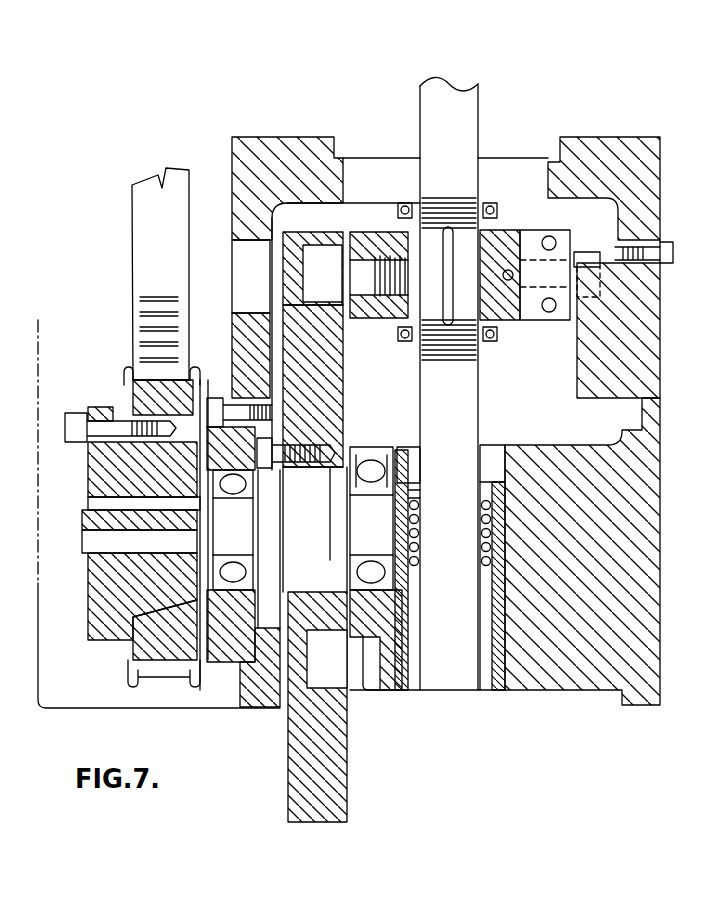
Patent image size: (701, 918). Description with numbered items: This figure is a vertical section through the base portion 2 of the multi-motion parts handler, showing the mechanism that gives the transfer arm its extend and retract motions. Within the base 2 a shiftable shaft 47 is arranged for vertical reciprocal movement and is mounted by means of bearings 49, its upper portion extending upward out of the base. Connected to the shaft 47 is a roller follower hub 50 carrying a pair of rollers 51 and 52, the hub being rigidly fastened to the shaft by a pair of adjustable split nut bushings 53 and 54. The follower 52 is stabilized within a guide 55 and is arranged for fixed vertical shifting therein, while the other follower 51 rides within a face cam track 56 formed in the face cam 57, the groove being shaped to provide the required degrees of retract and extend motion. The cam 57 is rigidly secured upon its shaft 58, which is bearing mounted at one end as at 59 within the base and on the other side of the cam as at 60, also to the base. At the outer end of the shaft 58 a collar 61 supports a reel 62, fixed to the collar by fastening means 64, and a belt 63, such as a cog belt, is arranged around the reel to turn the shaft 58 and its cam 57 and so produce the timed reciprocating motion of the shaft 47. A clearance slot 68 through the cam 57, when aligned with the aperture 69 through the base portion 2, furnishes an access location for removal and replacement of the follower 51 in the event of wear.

The base portion 2 is at (645, 637).
The shiftable shaft 47 is at (488, 398).
The bearings 49 is at (416, 508).
The roller follower hub 50 is at (386, 308).
The roller 51 is at (313, 268).
The roller 52 is at (583, 252).
The adjustable split nut bushing 53 is at (487, 233).
The adjustable split nut bushing 54 is at (480, 337).
The guide 55 is at (638, 341).
The face cam track 56 is at (324, 306).
The face cam 57 is at (336, 782).
The shaft 58 is at (100, 541).
The bearing 59 is at (370, 468).
The bearing 60 is at (220, 494).
The collar 61 is at (100, 606).
The reel 62 is at (128, 655).
The belt 63 is at (133, 262).
The fastening means 64 is at (79, 443).
The clearance slot 68 is at (290, 243).
The aperture 69 is at (247, 312).